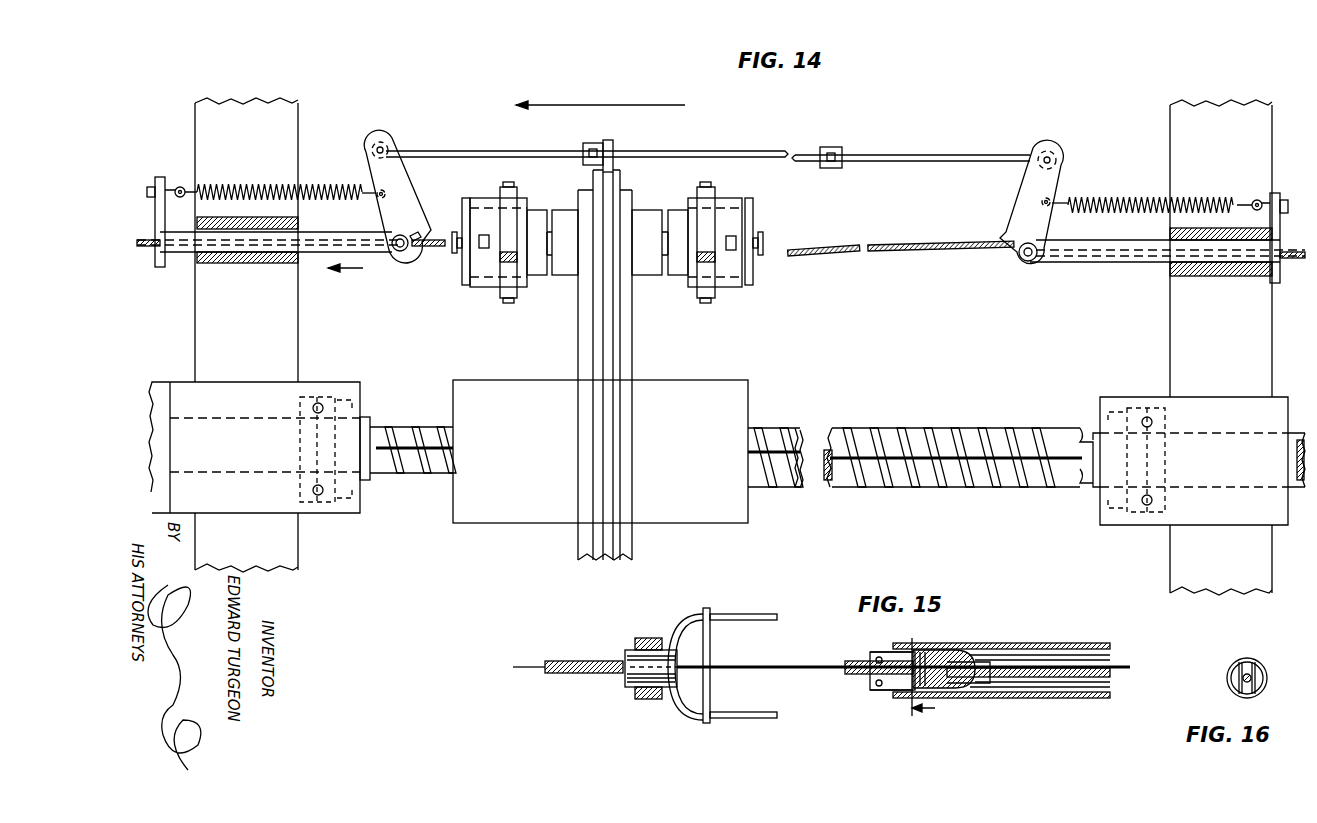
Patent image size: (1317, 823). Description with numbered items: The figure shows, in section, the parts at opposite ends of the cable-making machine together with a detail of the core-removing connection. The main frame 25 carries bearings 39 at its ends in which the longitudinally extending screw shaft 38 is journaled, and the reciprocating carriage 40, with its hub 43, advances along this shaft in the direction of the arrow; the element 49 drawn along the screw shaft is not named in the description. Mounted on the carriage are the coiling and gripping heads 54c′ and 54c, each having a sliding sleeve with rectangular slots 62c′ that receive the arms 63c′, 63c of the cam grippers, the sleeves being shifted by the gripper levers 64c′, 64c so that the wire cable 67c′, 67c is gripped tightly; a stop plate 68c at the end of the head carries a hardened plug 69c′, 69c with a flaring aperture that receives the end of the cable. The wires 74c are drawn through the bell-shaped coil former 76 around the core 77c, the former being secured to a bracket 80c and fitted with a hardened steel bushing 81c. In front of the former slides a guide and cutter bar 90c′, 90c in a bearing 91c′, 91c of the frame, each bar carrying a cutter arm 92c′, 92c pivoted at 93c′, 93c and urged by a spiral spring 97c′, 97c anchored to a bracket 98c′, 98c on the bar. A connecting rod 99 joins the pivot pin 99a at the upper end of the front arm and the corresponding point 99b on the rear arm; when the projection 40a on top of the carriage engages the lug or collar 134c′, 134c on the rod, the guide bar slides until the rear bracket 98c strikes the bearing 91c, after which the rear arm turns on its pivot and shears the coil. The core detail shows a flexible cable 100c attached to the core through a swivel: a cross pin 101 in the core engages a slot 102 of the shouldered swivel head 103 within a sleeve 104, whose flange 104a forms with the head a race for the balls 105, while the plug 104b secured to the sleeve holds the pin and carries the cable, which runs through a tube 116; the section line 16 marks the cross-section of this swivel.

In FIG. 14, the main frame 25 is at (213, 328).
In FIG. 14, the screw shaft 38 is at (921, 430).
In FIG. 14, the bearings 39 is at (320, 406).
In FIG. 14, the carriage 40 is at (614, 333).
In FIG. 14, the projection 40a is at (613, 146).
In FIG. 14, the hub 43 is at (665, 393).
In FIG. 14, the rod 49 is at (872, 455).
In FIG. 14, the coiling and gripping head 54c is at (680, 270).
In FIG. 14, the coiling and gripping head 54c′ is at (540, 272).
In FIG. 14, the rectangular slots 62c′ is at (484, 236).
In FIG. 14, the gripper arms 63c is at (731, 237).
In FIG. 14, the gripper arms 63c′ is at (506, 256).
In FIG. 14, the gripper lever 64c is at (706, 276).
In FIG. 14, the gripper lever 64c′ is at (510, 258).
In FIG. 14, the wire cable 67c is at (965, 250).
In FIG. 15, the wire cable 67c is at (590, 674).
In FIG. 14, the wire cable 67c′ is at (438, 248).
In FIG. 14, the stop plate 68c is at (755, 218).
In FIG. 14, the hardened plug 69c is at (764, 242).
In FIG. 14, the hardened plug 69c′ is at (454, 232).
In FIG. 15, the wires 74c is at (745, 614).
In FIG. 15, the coil former 76 is at (692, 644).
In FIG. 15, the core 77c is at (753, 665).
In FIG. 15, the bracket 80c is at (657, 700).
In FIG. 15, the hardened steel bushing 81c is at (640, 676).
In FIG. 14, the guide and cutter bar 90c is at (1132, 262).
In FIG. 14, the guide and cutter bar 90c′ is at (340, 252).
In FIG. 14, the bearing 91c is at (1232, 276).
In FIG. 14, the bearing 91c′ is at (248, 263).
In FIG. 14, the cutter arm 92c is at (1022, 186).
In FIG. 14, the cutter arm 92c′ is at (375, 165).
In FIG. 14, the pivot pin 93c is at (1027, 262).
In FIG. 14, the pivot 93c′ is at (405, 252).
In FIG. 14, the spiral spring 97c is at (1110, 200).
In FIG. 14, the spiral spring 97c′ is at (238, 183).
In FIG. 14, the rear bracket 98c is at (1273, 194).
In FIG. 14, the bracket 98c′ is at (161, 178).
In FIG. 14, the rod 99 is at (708, 152).
In FIG. 14, the pivot pin 99a is at (386, 146).
In FIG. 14, the pivot 99b is at (1050, 156).
In FIG. 15, the flexible cable 100c is at (1045, 678).
In FIG. 15, the cross pin 101 is at (880, 655).
In FIG. 16, the cross pin 101 is at (1230, 668).
In FIG. 16, the slot 102 is at (1234, 690).
In FIG. 15, the swivel head 103 is at (862, 676).
In FIG. 16, the swivel head 103 is at (1256, 664).
In FIG. 15, the sleeve 104 is at (932, 650).
In FIG. 15, the flange 104a is at (872, 692).
In FIG. 15, the plug 104b is at (968, 650).
In FIG. 15, the balls 105 is at (870, 658).
In FIG. 15, the tubes 116 is at (1060, 648).
In FIG. 14, the lug or collar 134c is at (834, 147).
In FIG. 14, the lug or collar 134c′ is at (600, 143).
In FIG. 15, the section line 16 is at (918, 679).